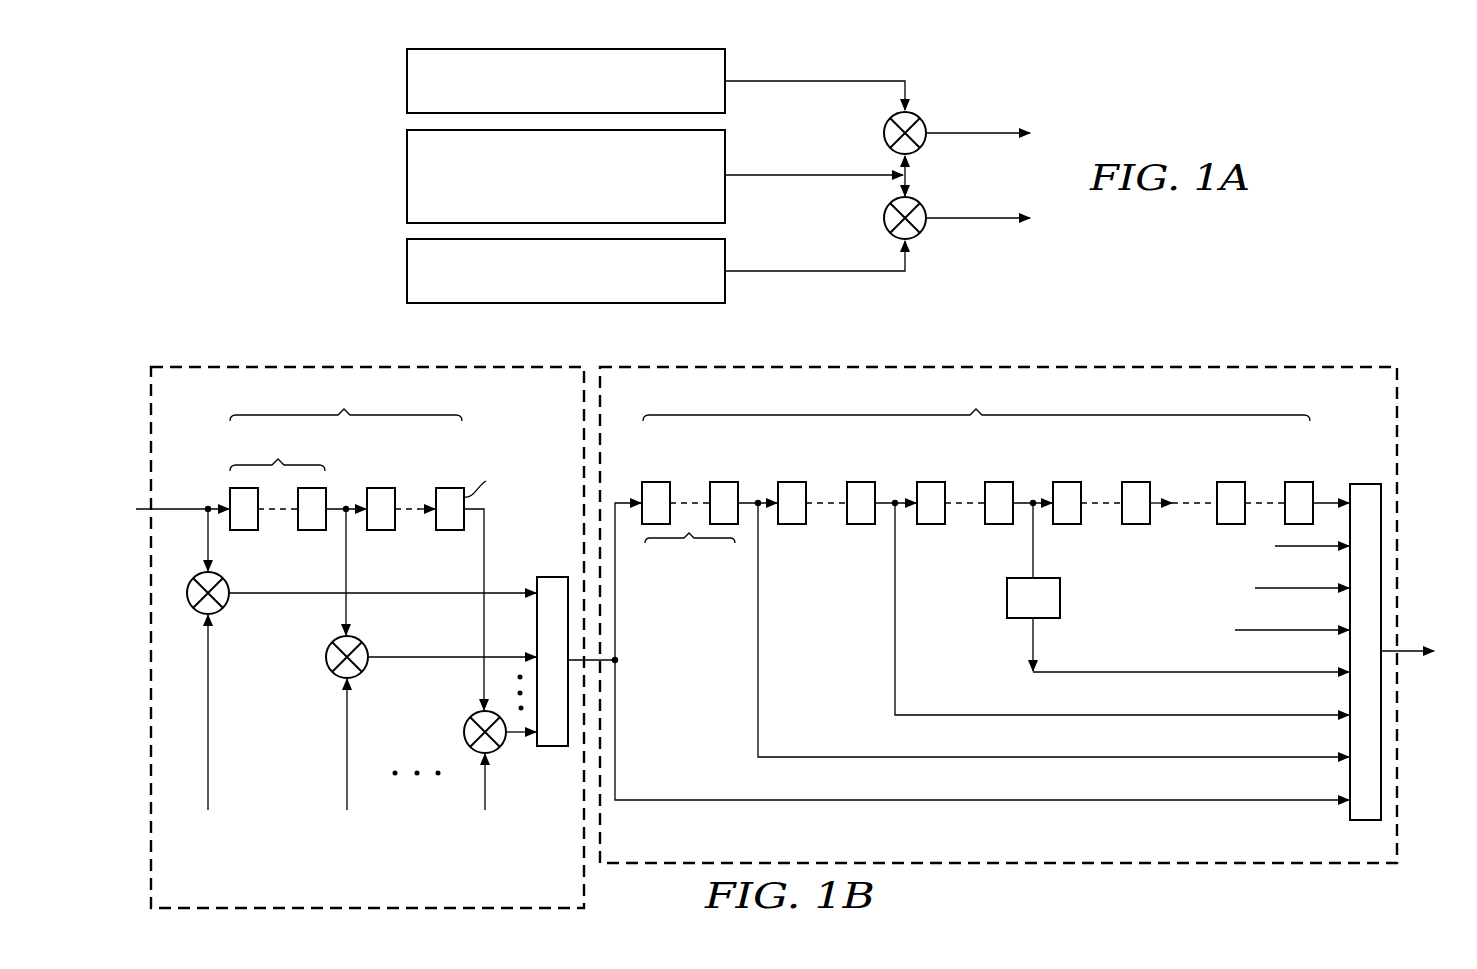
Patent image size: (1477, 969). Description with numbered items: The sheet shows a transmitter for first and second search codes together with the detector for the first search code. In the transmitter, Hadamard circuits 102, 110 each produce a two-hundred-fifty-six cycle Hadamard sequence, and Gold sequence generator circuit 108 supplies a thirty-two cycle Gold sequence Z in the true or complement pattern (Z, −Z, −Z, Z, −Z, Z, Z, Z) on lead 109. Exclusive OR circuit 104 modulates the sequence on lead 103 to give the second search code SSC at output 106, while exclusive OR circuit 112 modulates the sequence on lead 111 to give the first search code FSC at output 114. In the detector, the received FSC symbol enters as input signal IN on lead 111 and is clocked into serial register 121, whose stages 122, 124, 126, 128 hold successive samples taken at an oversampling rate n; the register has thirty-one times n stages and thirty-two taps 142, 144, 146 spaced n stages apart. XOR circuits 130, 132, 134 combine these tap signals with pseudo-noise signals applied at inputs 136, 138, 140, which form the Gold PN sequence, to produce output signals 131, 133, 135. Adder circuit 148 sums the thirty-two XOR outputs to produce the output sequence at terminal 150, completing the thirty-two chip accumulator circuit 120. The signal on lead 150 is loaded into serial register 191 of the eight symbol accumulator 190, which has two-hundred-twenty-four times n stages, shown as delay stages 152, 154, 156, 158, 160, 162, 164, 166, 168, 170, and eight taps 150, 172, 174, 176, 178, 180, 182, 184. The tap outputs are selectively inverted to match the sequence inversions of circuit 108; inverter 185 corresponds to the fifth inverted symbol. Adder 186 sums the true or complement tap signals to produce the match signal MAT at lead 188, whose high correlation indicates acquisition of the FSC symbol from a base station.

In FIG. 1A, the Hadamard sequence circuit 102 is at (407, 82).
In FIG. 1A, the lead 103 is at (798, 82).
In FIG. 1A, the exclusive OR circuit 104 is at (948, 113).
In FIG. 1A, the SSC output 106 is at (1000, 131).
In FIG. 1A, the Gold sequence generator circuit 108 is at (407, 178).
In FIG. 1A, the Gold sequence output line 109 is at (752, 174).
In FIG. 1A, the Hadamard sequence circuit 110 is at (407, 273).
In FIG. 1A, the lead 111 is at (782, 270).
In FIG. 1B, the lead 111 is at (188, 513).
In FIG. 1A, the exclusive OR circuit 112 is at (925, 207).
In FIG. 1A, the FSC output 114 is at (1000, 221).
In FIG. 1B, the 32-chip accumulator circuit 120 is at (219, 366).
In FIG. 1B, the serial register 121 is at (494, 443).
In FIG. 1B, the delay element 122 is at (228, 490).
In FIG. 1B, the delay element 124 is at (312, 530).
In FIG. 1B, the delay element 126 is at (381, 530).
In FIG. 1B, the delay element 128 is at (450, 530).
In FIG. 1B, the XOR circuit 130 is at (217, 616).
In FIG. 1B, the output signal 131 is at (420, 595).
In FIG. 1B, the XOR circuit 132 is at (325, 660).
In FIG. 1B, the output signal 133 is at (389, 661).
In FIG. 1B, the XOR circuit 134 is at (463, 728).
In FIG. 1B, the output signal 135 is at (514, 736).
In FIG. 1B, the PN sequence register input 136 is at (210, 707).
In FIG. 1B, the PN sequence register input 138 is at (345, 748).
In FIG. 1B, the PN sequence register input 140 is at (483, 793).
In FIG. 1B, the tap 142 is at (211, 549).
In FIG. 1B, the tap 144 is at (342, 622).
In FIG. 1B, the tap 146 is at (482, 671).
In FIG. 1B, the adder circuit 148 is at (548, 577).
In FIG. 1B, the terminal 150 is at (618, 697).
In FIG. 1B, the delay element 152 is at (633, 524).
In FIG. 1B, the delay element 154 is at (748, 524).
In FIG. 1B, the delay element 156 is at (792, 524).
In FIG. 1B, the delay element 158 is at (861, 524).
In FIG. 1B, the delay element 160 is at (933, 482).
In FIG. 1B, the delay element 162 is at (1002, 482).
In FIG. 1B, the delay element 164 is at (1067, 482).
In FIG. 1B, the delay element 166 is at (1136, 482).
In FIG. 1B, the delay element 168 is at (1231, 482).
In FIG. 1B, the delay element 170 is at (1299, 482).
In FIG. 1B, the tap 172 is at (756, 640).
In FIG. 1B, the tap 174 is at (893, 640).
In FIG. 1B, the tap 176 is at (1029, 643).
In FIG. 1B, the tap 178 is at (1235, 630).
In FIG. 1B, the tap 180 is at (1255, 588).
In FIG. 1B, the tap 182 is at (1275, 546).
In FIG. 1B, the tap line to adder 184 is at (1326, 500).
In FIG. 1B, the inverter 185 is at (1007, 598).
In FIG. 1B, the adder 186 is at (1346, 814).
In FIG. 1B, the lead 188 is at (1413, 655).
In FIG. 1B, the 8 symbol accumulator 190 is at (1297, 865).
In FIG. 1B, the serial register 191 is at (1340, 431).